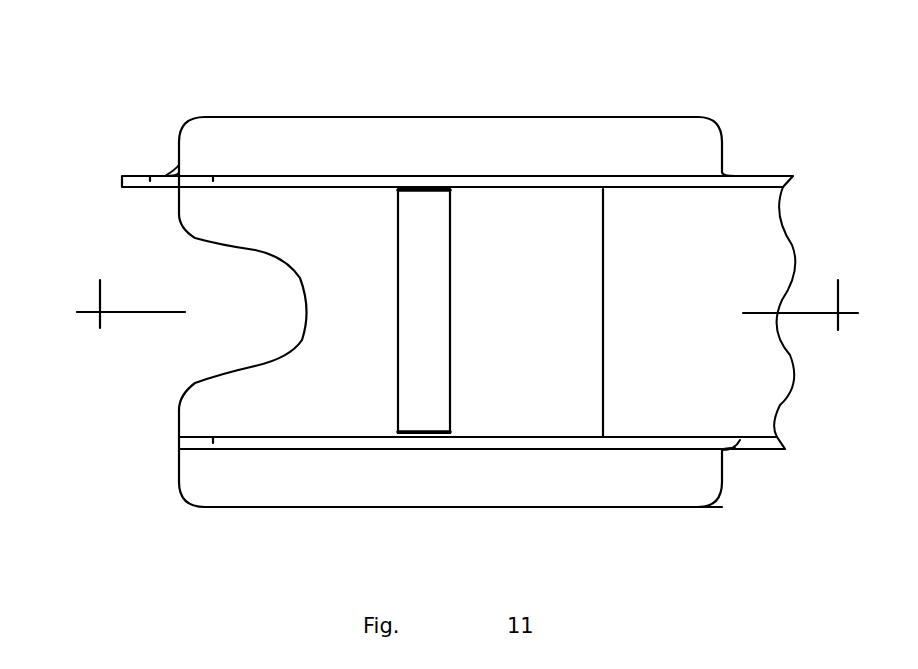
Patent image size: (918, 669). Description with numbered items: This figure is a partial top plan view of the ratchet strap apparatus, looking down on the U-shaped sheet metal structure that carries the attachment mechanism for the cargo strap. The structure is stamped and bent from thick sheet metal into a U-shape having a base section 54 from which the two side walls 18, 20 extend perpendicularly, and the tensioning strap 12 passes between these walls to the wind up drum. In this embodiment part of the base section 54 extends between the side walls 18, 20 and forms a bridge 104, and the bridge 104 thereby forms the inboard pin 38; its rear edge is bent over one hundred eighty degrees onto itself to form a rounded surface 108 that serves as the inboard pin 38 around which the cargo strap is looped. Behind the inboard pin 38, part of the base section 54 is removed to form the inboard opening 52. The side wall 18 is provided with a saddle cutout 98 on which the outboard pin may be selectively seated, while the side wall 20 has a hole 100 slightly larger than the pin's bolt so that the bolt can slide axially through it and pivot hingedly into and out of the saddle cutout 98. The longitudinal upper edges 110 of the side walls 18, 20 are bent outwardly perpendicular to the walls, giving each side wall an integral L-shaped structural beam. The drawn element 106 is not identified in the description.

The longitudinal upper edges 110 is at (525, 133).
The side wall 20 is at (748, 180).
The side wall 18 is at (745, 442).
The hole/opening 100 is at (157, 163).
The saddle cutout 98 is at (163, 444).
The inboard pin 38 is at (430, 403).
The first side surface 106 is at (388, 230).
The rounded surface 108 is at (447, 257).
The base section/portion 54 is at (660, 222).
The inboard opening 52 is at (540, 235).
The bridge 104 is at (323, 405).
The tensioning strap 12 is at (472, 315).